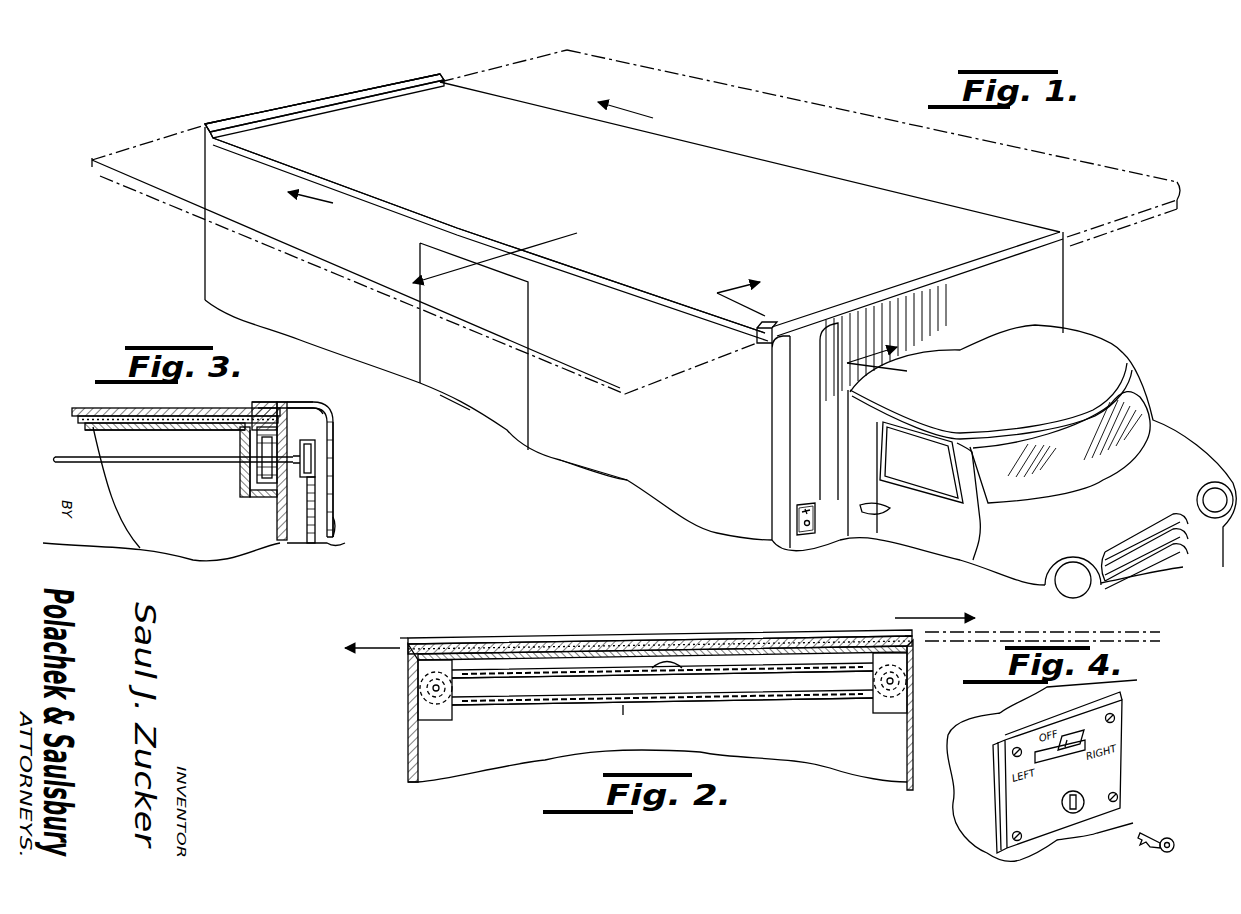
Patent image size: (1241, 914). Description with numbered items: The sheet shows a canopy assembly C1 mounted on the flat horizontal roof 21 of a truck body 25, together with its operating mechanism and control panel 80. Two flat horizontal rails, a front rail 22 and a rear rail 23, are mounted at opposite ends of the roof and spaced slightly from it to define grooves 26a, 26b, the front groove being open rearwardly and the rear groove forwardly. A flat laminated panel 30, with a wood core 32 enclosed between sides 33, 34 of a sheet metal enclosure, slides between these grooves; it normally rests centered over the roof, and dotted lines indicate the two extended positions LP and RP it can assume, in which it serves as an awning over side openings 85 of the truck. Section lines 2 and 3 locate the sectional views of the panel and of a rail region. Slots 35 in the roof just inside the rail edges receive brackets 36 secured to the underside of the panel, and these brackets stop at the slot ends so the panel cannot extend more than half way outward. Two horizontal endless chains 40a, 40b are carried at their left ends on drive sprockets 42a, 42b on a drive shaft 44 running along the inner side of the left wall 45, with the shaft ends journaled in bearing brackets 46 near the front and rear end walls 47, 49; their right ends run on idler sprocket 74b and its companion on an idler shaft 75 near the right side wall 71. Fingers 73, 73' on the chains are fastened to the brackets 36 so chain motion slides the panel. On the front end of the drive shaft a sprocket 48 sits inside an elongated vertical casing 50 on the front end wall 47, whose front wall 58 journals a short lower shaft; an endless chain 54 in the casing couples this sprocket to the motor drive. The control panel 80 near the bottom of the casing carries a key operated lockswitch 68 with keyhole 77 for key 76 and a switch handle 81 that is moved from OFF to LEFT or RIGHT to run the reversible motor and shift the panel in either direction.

In FIG. 1, the canopy assembly C1 is at (357, 132).
In FIG. 1, the right extended position RP is at (1118, 168).
In FIG. 1, the left extended position LP is at (603, 394).
In FIG. 1, the section line 2— 2 is at (477, 162).
In FIG. 1, the section line 3— 3 is at (819, 320).
In FIG. 3, the roof 21 is at (125, 431).
In FIG. 2, the roof 21 is at (610, 660).
In FIG. 1, the front rail 22 is at (1060, 233).
In FIG. 3, the front rail 22 is at (280, 400).
In FIG. 1, the rear rail 23 is at (256, 116).
In FIG. 2, the rear rail 23 is at (578, 636).
In FIG. 1, the truck body 25 is at (203, 285).
In FIG. 3, the truck body 25 is at (285, 549).
In FIG. 2, the truck body 25 is at (571, 755).
In FIG. 1, the front groove 26a is at (758, 346).
In FIG. 3, the front groove 26a is at (296, 412).
In FIG. 1, the rear groove 26b is at (203, 136).
In FIG. 2, the rear groove 26b is at (866, 636).
In FIG. 1, the laminated panel 30 is at (665, 312).
In FIG. 2, the laminated panel 30 is at (406, 655).
In FIG. 3, the wood core 32 is at (80, 419).
In FIG. 2, the wood core 32 is at (745, 642).
In FIG. 1, the sheet metal side 33 is at (398, 112).
In FIG. 3, the sheet metal side 33 is at (72, 409).
In FIG. 2, the sheet metal side 33 is at (826, 640).
In FIG. 3, the sheet metal side 34 is at (100, 431).
In FIG. 2, the sheet metal side 34 is at (785, 658).
In FIG. 3, the slot 35 is at (242, 408).
In FIG. 3, the bracket 36 is at (290, 418).
In FIG. 3, the endless chain 40a is at (268, 500).
In FIG. 2, the endless chain 40b is at (623, 706).
In FIG. 3, the drive sprocket 42a is at (240, 470).
In FIG. 2, the drive sprocket 42b is at (463, 688).
In FIG. 3, the drive shaft 44 is at (75, 465).
In FIG. 2, the drive shaft 44 is at (432, 690).
In FIG. 1, the left wall 45 is at (626, 472).
In FIG. 2, the left wall 45 is at (412, 765).
In FIG. 3, the bearing bracket 46 is at (258, 488).
In FIG. 2, the bearing bracket 46 is at (425, 708).
In FIG. 1, the front end wall 47 is at (1035, 291).
In FIG. 3, the front end wall 47 is at (277, 532).
In FIG. 3, the sprocket 48 is at (316, 448).
In FIG. 2, the rear end wall 49 is at (526, 750).
In FIG. 1, the casing 50 is at (783, 505).
In FIG. 3, the casing 50 is at (322, 490).
In FIG. 4, the casing 50 is at (962, 772).
In FIG. 3, the endless chain 54 is at (313, 510).
In FIG. 1, the front wall of casing 58 is at (805, 470).
In FIG. 3, the front wall of casing 58 is at (334, 528).
In FIG. 4, the front wall of casing 58 is at (1120, 692).
In FIG. 1, the lockswitch 68 is at (812, 527).
In FIG. 4, the lockswitch 68 is at (1082, 800).
In FIG. 2, the right side wall 71 is at (905, 758).
In FIG. 3, the finger 73 is at (232, 455).
In FIG. 2, the finger 73' is at (687, 635).
In FIG. 2, the idler sprocket 74b is at (875, 702).
In FIG. 2, the idler shaft 75 is at (892, 681).
In FIG. 4, the key 76 is at (1180, 828).
In FIG. 4, the keyhole 77 is at (1067, 813).
In FIG. 1, the control panel 80 is at (811, 535).
In FIG. 4, the control panel 80 is at (1015, 806).
In FIG. 1, the switch handle 81 is at (812, 513).
In FIG. 4, the switch handle 81 is at (1085, 745).
In FIG. 1, the side opening 85 is at (523, 422).